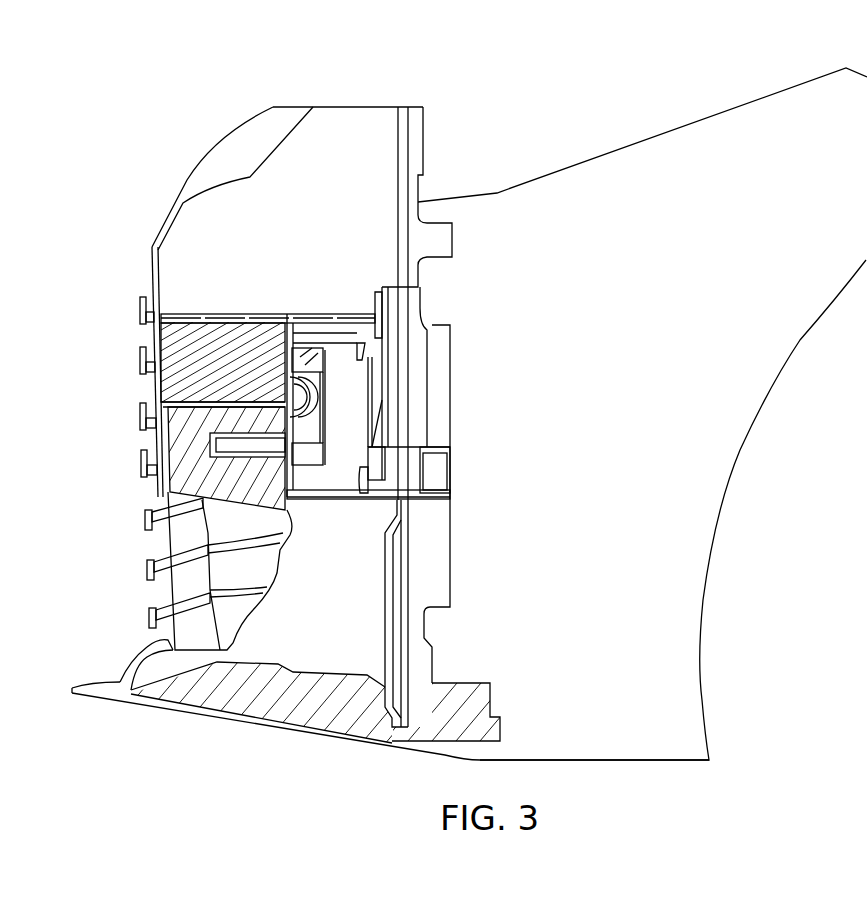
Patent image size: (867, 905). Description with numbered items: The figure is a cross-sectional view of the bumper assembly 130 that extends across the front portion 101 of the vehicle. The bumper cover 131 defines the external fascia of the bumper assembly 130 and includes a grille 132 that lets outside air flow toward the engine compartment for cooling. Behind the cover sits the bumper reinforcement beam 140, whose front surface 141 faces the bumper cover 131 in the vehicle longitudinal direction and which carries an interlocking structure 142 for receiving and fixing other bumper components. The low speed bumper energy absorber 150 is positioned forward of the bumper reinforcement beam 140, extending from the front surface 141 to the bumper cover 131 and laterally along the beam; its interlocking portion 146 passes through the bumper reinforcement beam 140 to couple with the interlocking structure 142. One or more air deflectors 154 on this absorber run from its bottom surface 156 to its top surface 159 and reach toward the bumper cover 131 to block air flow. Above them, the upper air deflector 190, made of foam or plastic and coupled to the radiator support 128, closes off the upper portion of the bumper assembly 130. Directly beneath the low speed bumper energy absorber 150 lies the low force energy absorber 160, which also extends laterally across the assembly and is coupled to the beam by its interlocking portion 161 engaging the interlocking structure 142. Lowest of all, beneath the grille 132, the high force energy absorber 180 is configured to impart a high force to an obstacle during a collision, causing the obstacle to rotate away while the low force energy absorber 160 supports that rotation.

The front portion 101 is at (188, 105).
The radiator support 128 is at (420, 186).
The bumper assembly 130 is at (82, 147).
The bumper cover 131 is at (187, 185).
The grille 132 is at (112, 498).
The bumper reinforcement beam 140 is at (389, 417).
The front surface 141 is at (285, 352).
The interlocking structure 142 is at (352, 400).
The interlocking portion 146 is at (352, 356).
The low speed bumper energy absorber 150 is at (289, 331).
The air deflectors 154 is at (175, 380).
The bottom surface 156 is at (180, 405).
The top surface 159 is at (188, 313).
The low force energy absorber 160 is at (183, 437).
The interlocking portion 161 is at (318, 490).
The high force energy absorber 180 is at (164, 714).
The upper air deflector 190 is at (385, 107).